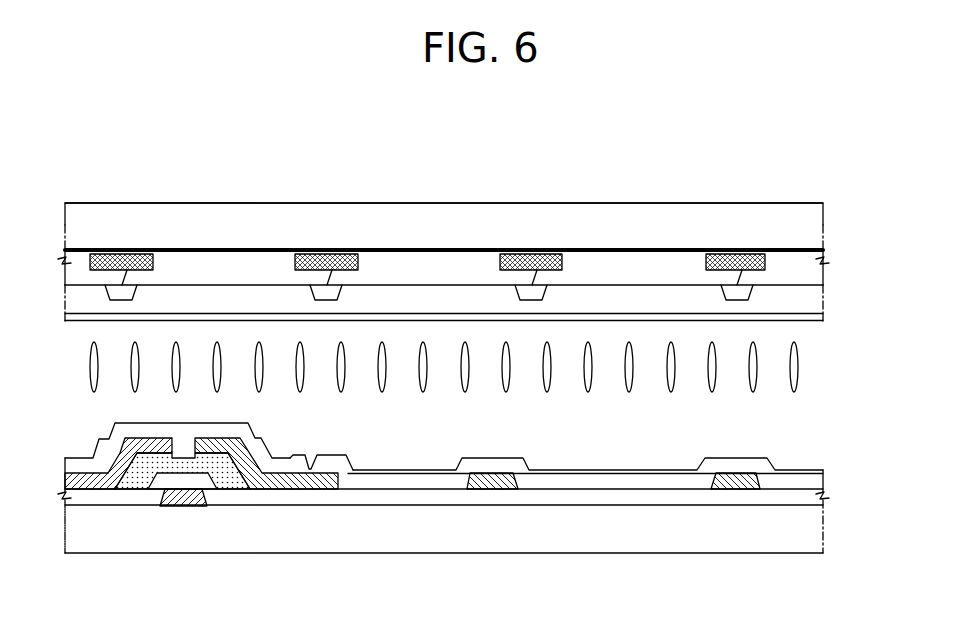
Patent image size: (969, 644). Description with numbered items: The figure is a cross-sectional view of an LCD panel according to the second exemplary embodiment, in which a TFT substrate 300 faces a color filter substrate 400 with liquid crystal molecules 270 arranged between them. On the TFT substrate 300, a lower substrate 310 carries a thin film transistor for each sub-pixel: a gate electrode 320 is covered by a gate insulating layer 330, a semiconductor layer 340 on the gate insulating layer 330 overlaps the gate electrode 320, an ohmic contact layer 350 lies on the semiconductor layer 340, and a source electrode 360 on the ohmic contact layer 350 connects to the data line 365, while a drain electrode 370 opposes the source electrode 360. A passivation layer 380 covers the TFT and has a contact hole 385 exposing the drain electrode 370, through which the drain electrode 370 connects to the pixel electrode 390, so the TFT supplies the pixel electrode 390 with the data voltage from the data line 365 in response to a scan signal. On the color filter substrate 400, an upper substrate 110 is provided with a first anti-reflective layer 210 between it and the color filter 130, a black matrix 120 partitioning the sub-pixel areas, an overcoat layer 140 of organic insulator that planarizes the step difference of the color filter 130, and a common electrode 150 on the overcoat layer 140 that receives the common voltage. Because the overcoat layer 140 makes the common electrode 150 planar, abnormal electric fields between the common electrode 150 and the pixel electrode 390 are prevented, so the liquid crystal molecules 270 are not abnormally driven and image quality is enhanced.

The upper substrate 110 is at (797, 210).
The black matrix 120 is at (733, 254).
The color filter 130 is at (573, 262).
The overcoat layer 140 is at (462, 293).
The common electrode 150 is at (378, 318).
The first anti-reflective layer 210 is at (656, 249).
The liquid crystal molecules 270 is at (801, 366).
The TFT substrate 300 is at (826, 487).
The lower substrate 310 is at (453, 540).
The gate electrode 320 is at (188, 493).
The gate insulating layer 330 is at (557, 500).
The semiconductor layer 340 is at (235, 476).
The ohmic contact layer 350 is at (131, 490).
The source electrode 360 is at (96, 487).
The data line 365 is at (508, 487).
The drain electrode 370 is at (303, 488).
The passivation layer 380 is at (403, 483).
The contact hole 385 is at (330, 473).
The pixel electrode 390 is at (663, 469).
The color filter substrate 400 is at (826, 232).